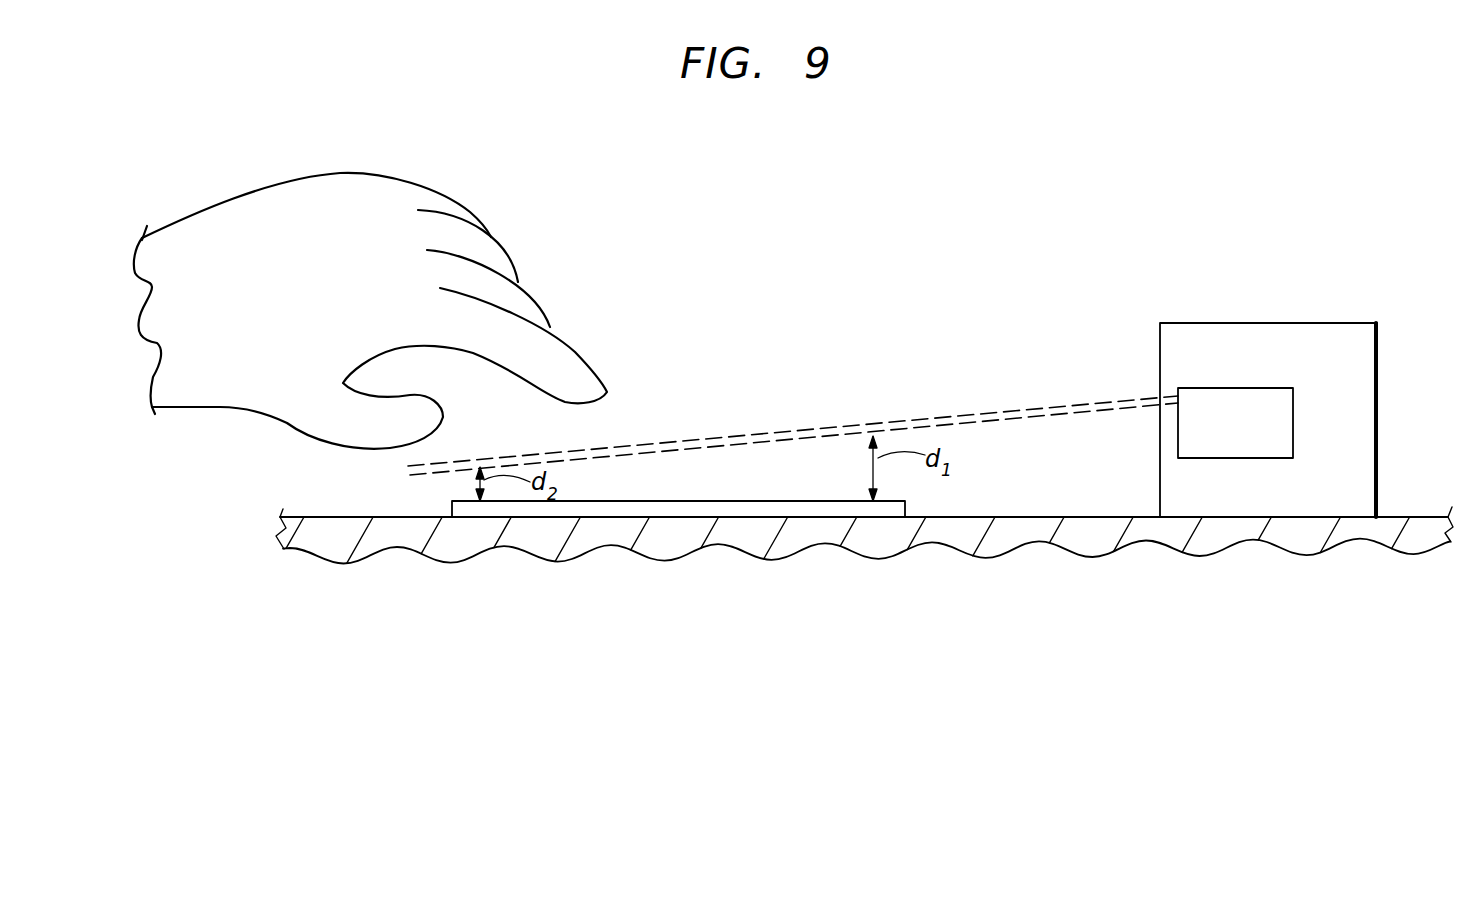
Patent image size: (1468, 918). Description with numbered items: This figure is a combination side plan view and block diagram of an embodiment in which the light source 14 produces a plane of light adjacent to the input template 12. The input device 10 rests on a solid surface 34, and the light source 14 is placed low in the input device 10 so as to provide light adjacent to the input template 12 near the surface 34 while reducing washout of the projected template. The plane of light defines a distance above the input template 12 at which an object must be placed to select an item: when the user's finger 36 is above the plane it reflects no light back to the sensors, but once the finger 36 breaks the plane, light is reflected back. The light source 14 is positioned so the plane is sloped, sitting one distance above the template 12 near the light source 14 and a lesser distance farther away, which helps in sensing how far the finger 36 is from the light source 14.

The input device 10 is at (1226, 323).
The input template 12 is at (905, 501).
The light source 14 is at (1257, 388).
The solid surface 34 is at (1392, 515).
The finger 36 is at (573, 355).